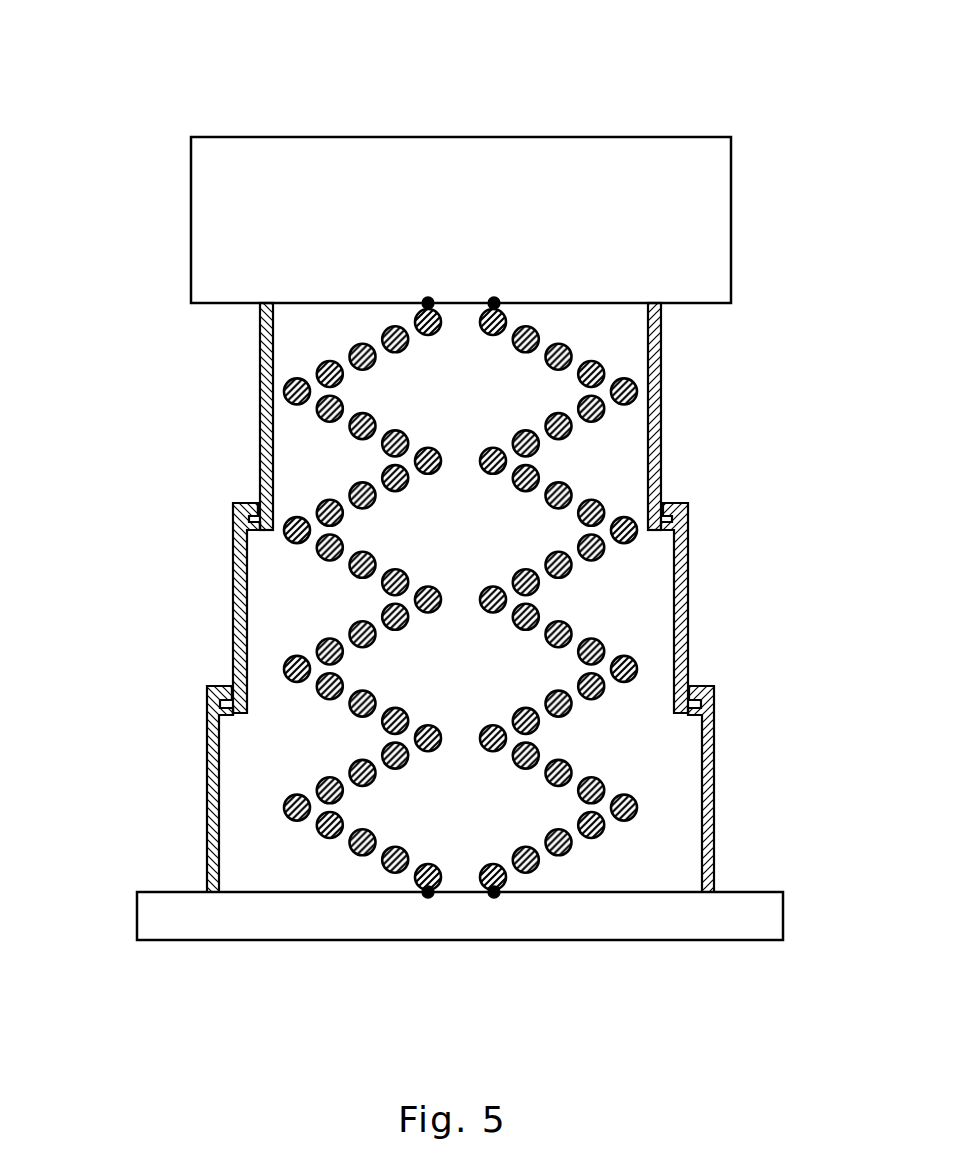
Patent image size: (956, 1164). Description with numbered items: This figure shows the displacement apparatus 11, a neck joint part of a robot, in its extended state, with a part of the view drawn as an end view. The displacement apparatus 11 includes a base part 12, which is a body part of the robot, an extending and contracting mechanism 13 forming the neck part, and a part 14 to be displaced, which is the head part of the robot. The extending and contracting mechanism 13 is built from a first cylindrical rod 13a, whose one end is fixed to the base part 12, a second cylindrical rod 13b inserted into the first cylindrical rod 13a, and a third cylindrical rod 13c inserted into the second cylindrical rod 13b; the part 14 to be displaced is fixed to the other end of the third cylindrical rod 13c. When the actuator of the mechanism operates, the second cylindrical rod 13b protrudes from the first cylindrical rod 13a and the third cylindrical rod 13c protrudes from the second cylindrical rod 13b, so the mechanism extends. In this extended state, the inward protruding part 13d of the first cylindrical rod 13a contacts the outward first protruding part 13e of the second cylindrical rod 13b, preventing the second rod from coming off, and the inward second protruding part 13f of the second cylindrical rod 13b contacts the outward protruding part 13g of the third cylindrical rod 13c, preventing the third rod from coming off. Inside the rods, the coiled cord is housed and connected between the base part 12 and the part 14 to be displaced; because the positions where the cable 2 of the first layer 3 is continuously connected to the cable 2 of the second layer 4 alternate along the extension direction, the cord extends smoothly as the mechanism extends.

The displacement apparatus 11 is at (811, 47).
The base part 12 is at (657, 918).
The extending and contracting mechanism 13 is at (451, 597).
The first cylindrical rod 13a is at (157, 751).
The second cylindrical rod 13b is at (171, 569).
The third cylindrical rod 13c is at (256, 418).
The protruding part 13d is at (218, 686).
The first protruding part 13e is at (228, 711).
The second protruding part 13f is at (239, 502).
The protruding part 13g is at (255, 526).
The part to be displaced 14 is at (703, 205).
The cable 2 is at (637, 392).
The first layer 3 is at (522, 590).
The second layer 4 is at (592, 437).